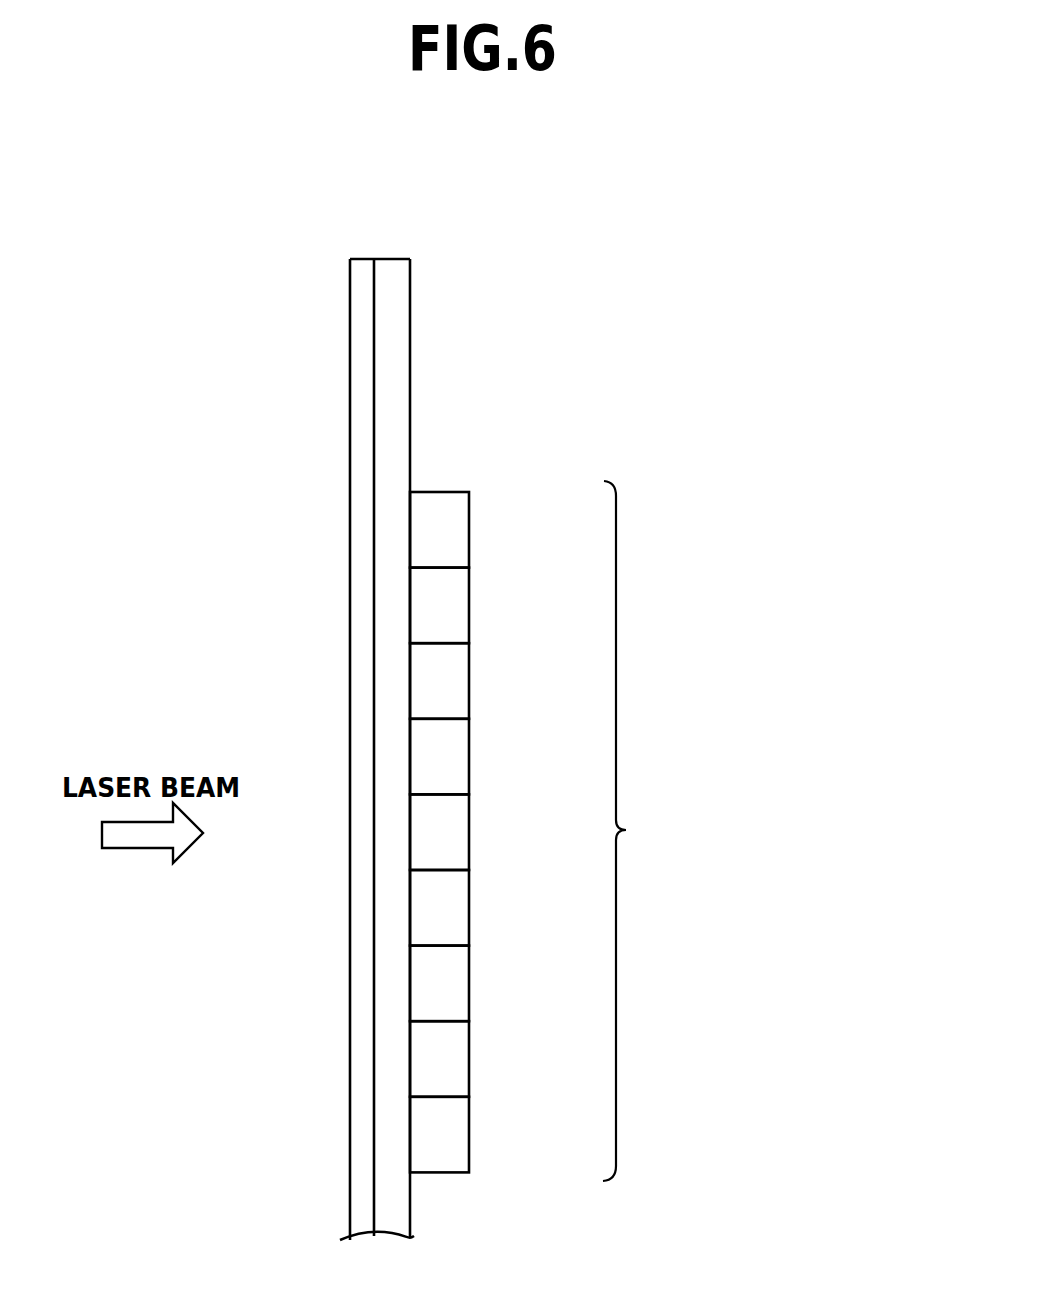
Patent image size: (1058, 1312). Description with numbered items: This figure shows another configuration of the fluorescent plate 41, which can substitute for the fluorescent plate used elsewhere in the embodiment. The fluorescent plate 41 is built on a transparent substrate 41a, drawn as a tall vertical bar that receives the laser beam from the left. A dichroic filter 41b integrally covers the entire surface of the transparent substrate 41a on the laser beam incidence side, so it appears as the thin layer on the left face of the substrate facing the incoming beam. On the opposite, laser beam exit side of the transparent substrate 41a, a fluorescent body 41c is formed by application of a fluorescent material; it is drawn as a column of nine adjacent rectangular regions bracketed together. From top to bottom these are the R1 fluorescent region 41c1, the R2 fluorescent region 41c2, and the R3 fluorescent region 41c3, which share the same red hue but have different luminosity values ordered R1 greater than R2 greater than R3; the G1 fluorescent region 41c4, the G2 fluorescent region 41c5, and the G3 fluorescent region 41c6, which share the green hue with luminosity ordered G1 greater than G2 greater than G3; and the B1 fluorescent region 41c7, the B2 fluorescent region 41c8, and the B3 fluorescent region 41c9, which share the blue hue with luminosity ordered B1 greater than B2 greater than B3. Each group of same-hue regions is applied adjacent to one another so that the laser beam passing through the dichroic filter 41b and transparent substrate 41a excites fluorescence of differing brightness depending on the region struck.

The fluorescent plate 41 is at (460, 328).
The transparent substrate 41a is at (397, 403).
The dichroic filter 41b is at (358, 404).
The fluorescent body 41c is at (657, 831).
The R1 fluorescent region 41c1 is at (469, 530).
The R2 fluorescent region 41c2 is at (469, 605).
The R3 fluorescent region 41c3 is at (469, 681).
The G1 fluorescent region 41c4 is at (469, 756).
The G2 fluorescent region 41c5 is at (469, 832).
The G3 fluorescent region 41c6 is at (469, 908).
The B1 fluorescent region 41c7 is at (469, 983).
The B2 fluorescent region 41c8 is at (469, 1059).
The B3 fluorescent region 41c9 is at (469, 1135).